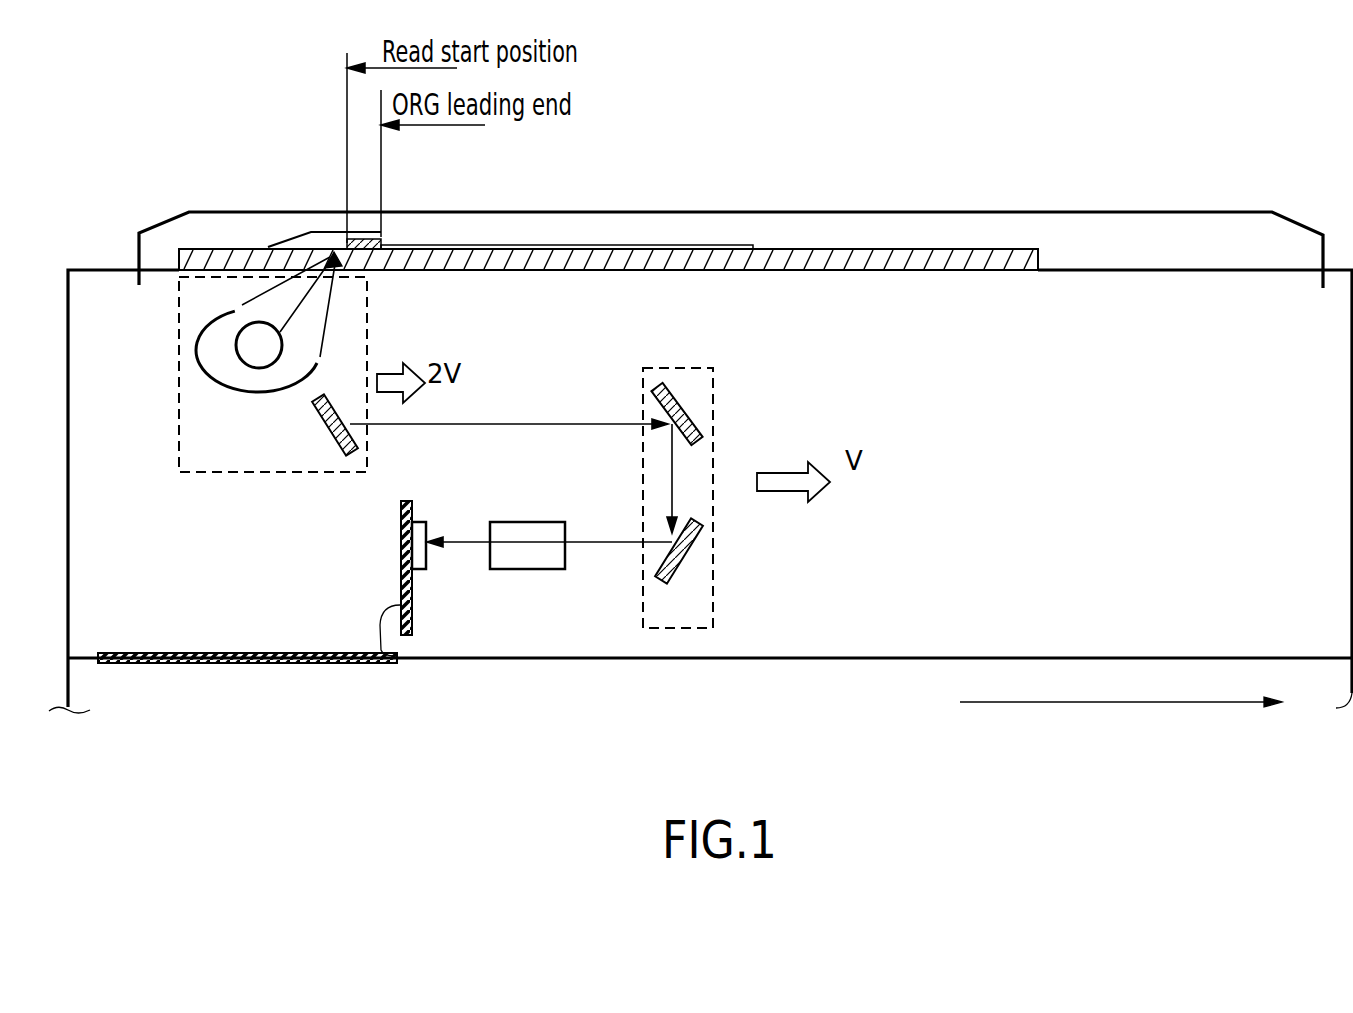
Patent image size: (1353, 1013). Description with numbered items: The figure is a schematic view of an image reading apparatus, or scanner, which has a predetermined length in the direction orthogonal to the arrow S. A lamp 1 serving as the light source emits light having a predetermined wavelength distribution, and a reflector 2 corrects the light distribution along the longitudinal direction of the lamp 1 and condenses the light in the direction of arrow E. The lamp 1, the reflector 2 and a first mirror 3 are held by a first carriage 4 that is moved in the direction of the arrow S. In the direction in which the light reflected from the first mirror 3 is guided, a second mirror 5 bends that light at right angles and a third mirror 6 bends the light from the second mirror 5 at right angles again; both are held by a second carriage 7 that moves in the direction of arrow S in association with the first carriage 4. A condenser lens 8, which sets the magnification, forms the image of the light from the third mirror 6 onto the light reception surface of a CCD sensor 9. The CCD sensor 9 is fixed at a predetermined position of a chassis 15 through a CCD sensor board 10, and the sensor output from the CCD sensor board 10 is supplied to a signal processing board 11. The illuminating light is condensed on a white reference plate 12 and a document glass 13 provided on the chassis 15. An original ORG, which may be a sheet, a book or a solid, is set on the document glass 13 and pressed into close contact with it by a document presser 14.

The lamp 1 is at (253, 340).
The reflector 2 is at (243, 392).
The first mirror 3 is at (337, 457).
The first carriage 4 is at (179, 417).
The second mirror 5 is at (701, 436).
The third mirror 6 is at (692, 546).
The second carriage 7 is at (690, 368).
The condenser lens 8 is at (532, 522).
The CCD sensor 9 is at (427, 522).
The CCD sensor board 10 is at (400, 588).
The signal processing board 11 is at (203, 653).
The white reference plate 12 is at (365, 238).
The document glass 13 is at (948, 270).
The document presser 14 is at (963, 212).
The chassis 15 is at (1310, 658).
The original ORG is at (752, 246).
The direction of light condensing E is at (303, 302).
The carriage moving direction S is at (1008, 705).